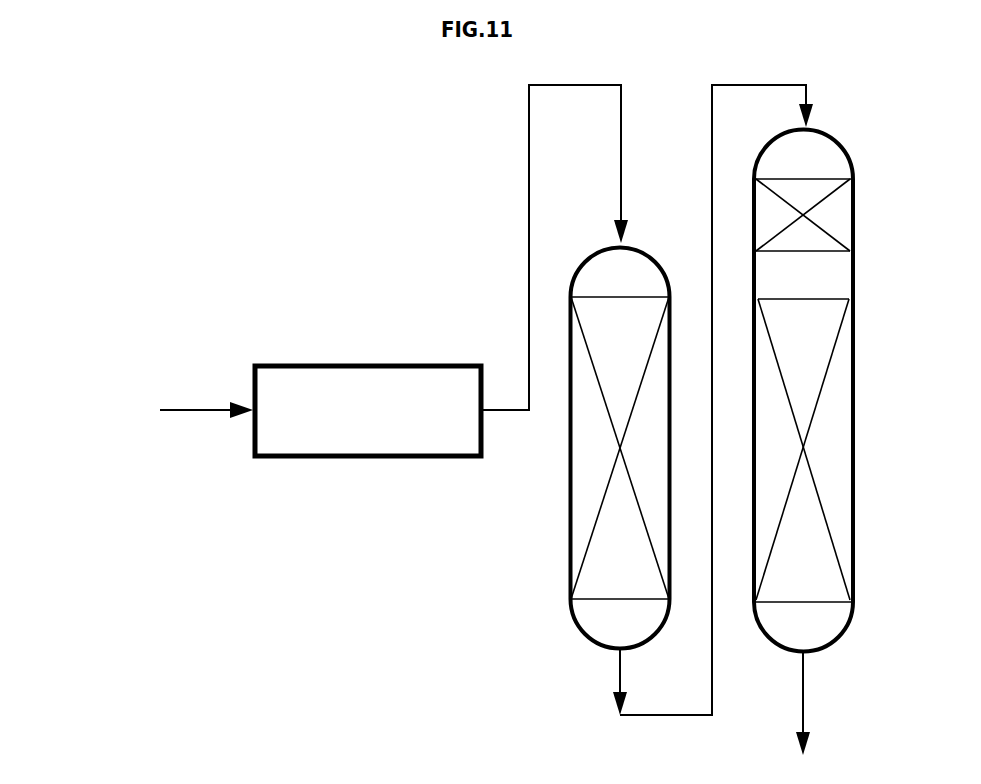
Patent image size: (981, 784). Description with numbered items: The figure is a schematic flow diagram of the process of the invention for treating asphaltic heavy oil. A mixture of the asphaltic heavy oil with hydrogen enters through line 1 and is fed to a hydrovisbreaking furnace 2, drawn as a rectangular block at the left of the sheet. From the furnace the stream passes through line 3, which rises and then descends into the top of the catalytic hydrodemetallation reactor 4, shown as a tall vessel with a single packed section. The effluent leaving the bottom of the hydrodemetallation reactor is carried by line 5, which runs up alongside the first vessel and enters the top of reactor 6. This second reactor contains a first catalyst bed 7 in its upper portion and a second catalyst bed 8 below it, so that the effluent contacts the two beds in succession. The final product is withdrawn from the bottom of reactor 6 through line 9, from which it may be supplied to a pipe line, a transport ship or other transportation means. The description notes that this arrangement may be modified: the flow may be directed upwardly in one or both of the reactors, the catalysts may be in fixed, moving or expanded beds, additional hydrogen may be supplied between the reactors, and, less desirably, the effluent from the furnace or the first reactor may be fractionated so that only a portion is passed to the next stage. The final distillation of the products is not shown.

The line 1 is at (211, 405).
The hydrovisbreaking furnace 2 is at (358, 363).
The line 3 is at (528, 235).
The catalytic hydrodemetallation reactor 4 is at (568, 513).
The line 5 is at (714, 692).
The reactor 6 is at (849, 628).
The first catalyst bed 7 is at (838, 220).
The second catalyst bed 8 is at (835, 437).
The line 9 is at (805, 717).